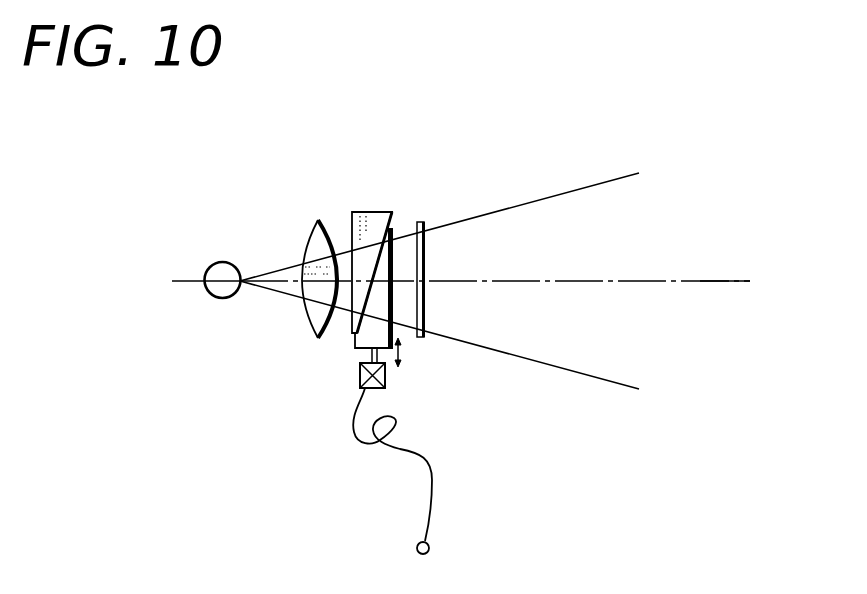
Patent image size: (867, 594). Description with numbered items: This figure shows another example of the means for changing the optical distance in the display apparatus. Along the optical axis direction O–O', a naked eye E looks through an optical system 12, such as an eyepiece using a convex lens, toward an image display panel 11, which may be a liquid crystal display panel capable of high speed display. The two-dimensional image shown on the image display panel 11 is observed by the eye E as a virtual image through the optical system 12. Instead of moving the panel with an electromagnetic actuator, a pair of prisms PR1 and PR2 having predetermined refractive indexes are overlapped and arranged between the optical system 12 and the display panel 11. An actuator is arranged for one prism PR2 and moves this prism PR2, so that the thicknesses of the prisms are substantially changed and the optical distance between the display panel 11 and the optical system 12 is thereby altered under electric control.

The optical system 12 is at (318, 220).
The image display panel 11 is at (424, 222).
The naked eye E is at (228, 262).
The first prism PR1 is at (349, 322).
The second prism PR2 is at (395, 328).
The optical axis point O is at (177, 281).
The optical axis point O' is at (738, 284).